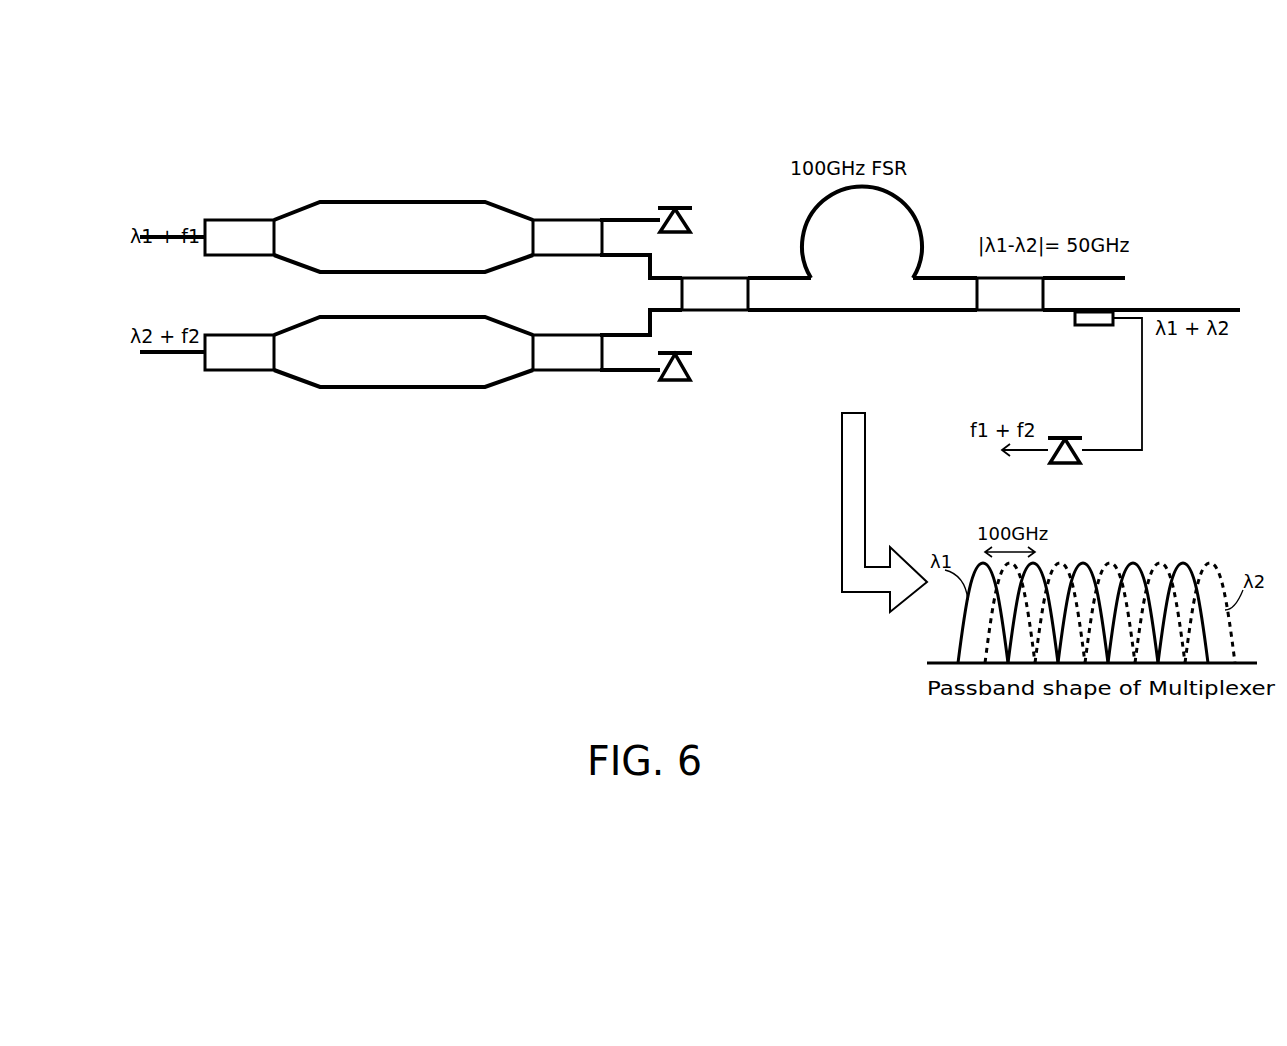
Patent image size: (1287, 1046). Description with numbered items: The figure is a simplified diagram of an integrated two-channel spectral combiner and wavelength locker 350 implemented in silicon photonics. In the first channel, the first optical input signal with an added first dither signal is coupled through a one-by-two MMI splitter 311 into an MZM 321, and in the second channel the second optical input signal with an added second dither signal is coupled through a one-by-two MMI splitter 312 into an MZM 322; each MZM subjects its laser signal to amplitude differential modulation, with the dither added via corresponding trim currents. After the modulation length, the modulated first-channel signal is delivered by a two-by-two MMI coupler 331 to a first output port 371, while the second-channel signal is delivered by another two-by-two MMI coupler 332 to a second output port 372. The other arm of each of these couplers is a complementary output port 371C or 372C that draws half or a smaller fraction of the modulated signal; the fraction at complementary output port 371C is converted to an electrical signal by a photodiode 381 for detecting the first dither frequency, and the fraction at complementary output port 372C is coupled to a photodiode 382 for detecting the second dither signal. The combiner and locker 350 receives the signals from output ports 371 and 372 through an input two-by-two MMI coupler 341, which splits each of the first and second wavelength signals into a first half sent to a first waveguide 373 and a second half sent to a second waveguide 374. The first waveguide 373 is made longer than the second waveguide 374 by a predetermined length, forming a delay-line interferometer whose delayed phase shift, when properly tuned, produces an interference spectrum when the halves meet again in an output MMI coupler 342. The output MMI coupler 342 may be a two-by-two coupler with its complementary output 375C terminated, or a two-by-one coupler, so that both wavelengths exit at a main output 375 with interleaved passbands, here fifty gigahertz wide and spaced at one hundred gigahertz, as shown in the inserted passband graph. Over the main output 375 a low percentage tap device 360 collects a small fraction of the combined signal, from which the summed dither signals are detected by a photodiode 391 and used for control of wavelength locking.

The 1×2 MMI splitter 311 is at (248, 218).
The 1×2 MMI splitter 312 is at (255, 372).
The MZM 321 is at (437, 200).
The MZM 322 is at (425, 388).
The 2×2 MMI coupler 331 is at (583, 218).
The 2×2 MMI coupler 332 is at (583, 372).
The input 2×2 MMI coupler 341 is at (708, 276).
The output MMI coupler 342 is at (988, 313).
The integrated two-channel spectral combiner and wavelength locker 350 is at (862, 232).
The low percentage tap device 360 is at (1103, 328).
The first output port 371 is at (641, 265).
The complementary output port 371C is at (650, 188).
The second output port 372 is at (641, 322).
The complementary output port 372C is at (638, 372).
The first waveguide 373 is at (760, 276).
The second waveguide 374 is at (780, 313).
The main output 375 is at (1063, 313).
The complementary output 375C is at (1108, 276).
The photodiode 381 is at (675, 206).
The photodiode 382 is at (680, 383).
The photodiode 391 is at (1075, 465).